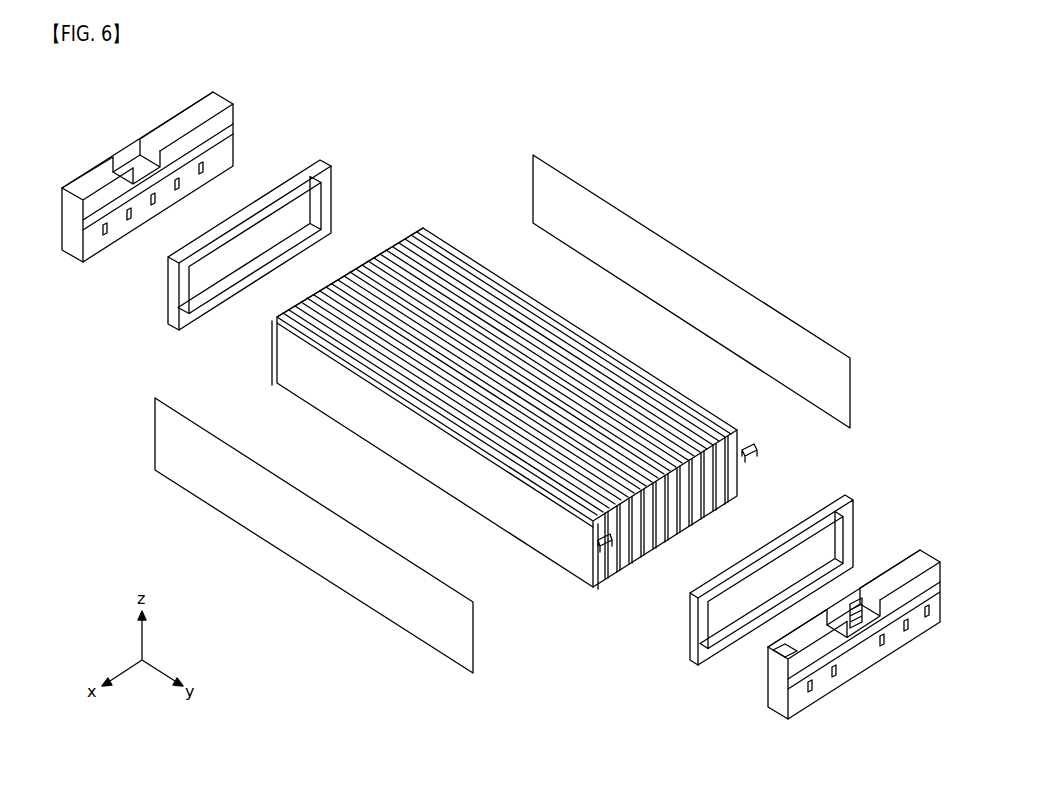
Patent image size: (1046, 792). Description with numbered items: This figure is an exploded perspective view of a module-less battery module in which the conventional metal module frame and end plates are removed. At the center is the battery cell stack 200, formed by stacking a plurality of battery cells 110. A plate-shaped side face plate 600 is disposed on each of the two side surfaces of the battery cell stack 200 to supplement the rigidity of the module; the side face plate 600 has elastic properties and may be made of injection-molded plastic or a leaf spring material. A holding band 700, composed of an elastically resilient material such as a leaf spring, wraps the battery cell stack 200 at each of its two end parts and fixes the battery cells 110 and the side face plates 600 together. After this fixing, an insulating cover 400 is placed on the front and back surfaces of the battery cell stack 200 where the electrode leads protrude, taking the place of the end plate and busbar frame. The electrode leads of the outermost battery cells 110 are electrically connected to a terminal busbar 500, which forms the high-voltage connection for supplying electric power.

The battery cell 110 is at (512, 317).
The battery cell stack 200 is at (504, 383).
The insulating cover 400 is at (249, 116).
The terminal busbar 500 is at (742, 445).
The side face plate 600 is at (742, 300).
The holding band 700 is at (176, 296).